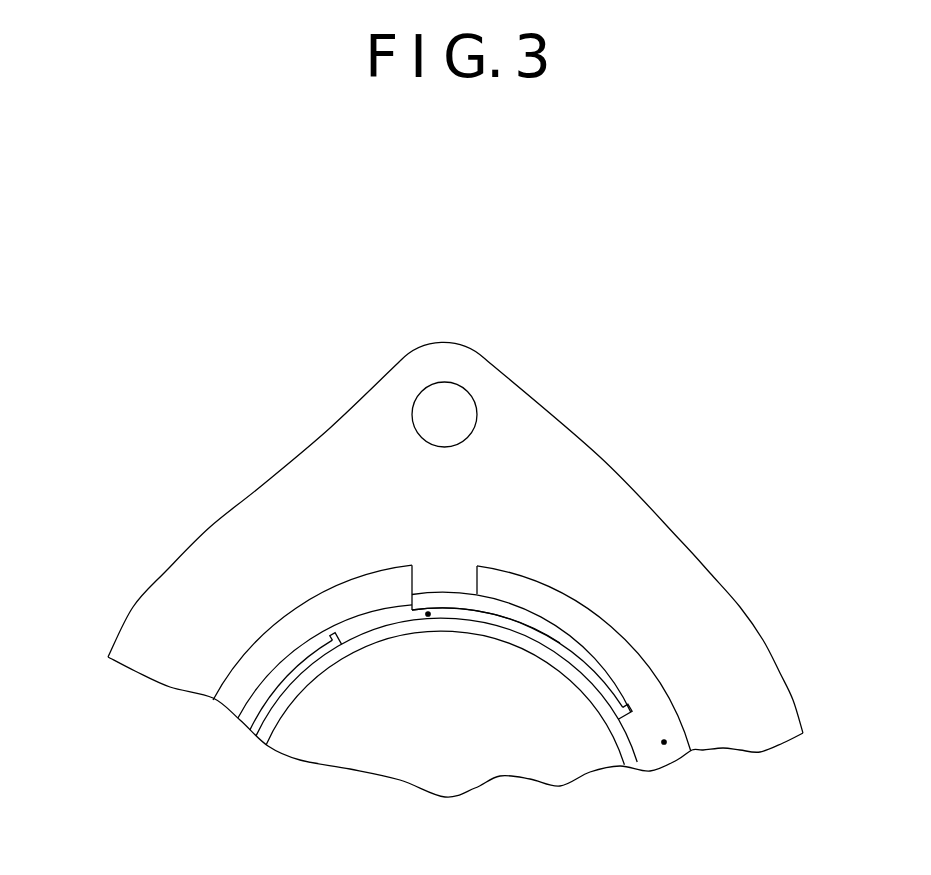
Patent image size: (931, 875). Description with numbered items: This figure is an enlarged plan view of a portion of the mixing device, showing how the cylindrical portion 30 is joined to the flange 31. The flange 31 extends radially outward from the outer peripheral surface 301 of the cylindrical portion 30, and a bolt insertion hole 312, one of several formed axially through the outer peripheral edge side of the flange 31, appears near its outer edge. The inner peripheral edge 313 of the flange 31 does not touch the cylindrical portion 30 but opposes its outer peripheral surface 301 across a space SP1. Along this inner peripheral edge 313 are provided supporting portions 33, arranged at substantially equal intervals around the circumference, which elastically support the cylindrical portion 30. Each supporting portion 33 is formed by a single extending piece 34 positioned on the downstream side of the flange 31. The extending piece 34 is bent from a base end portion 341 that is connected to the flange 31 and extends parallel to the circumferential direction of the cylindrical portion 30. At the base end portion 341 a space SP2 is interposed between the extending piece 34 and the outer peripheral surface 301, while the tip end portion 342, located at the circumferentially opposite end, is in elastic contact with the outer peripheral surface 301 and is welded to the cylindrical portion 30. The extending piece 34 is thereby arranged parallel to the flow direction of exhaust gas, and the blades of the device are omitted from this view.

The cylindrical portion 30 is at (263, 747).
The flange 31 is at (612, 475).
The supporting portion 33 is at (270, 666).
The extending piece 34 is at (279, 682).
The outer peripheral surface 301 is at (381, 621).
The bolt insertion hole 312 is at (415, 404).
The inner peripheral edge 313 is at (650, 666).
The base end portion 341 is at (438, 598).
The tip end portion 342 is at (331, 635).
The space SP1 is at (666, 742).
The space SP2 is at (428, 616).